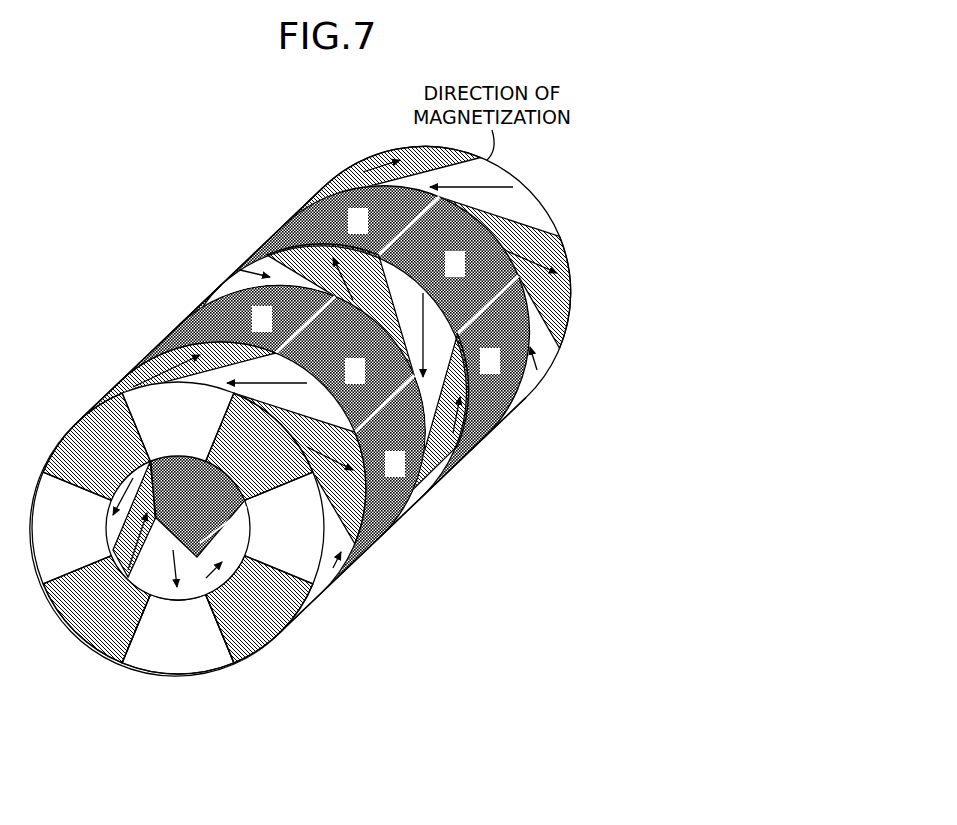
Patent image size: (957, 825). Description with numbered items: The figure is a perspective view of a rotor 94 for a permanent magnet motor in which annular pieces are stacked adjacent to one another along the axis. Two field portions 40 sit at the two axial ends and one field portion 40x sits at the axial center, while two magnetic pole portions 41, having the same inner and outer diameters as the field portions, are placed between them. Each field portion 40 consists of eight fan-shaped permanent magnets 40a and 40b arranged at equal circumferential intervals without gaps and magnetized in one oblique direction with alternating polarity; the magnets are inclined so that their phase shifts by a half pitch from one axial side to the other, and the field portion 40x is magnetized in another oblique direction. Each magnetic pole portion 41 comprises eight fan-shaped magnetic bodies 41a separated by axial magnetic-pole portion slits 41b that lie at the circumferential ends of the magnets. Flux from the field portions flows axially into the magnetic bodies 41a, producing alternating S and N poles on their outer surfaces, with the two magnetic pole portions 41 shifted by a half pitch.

The rotor 94 is at (628, 115).
The field portion 40 is at (280, 222).
The field portion 40x is at (176, 321).
The permanent magnet 40a is at (178, 658).
The permanent magnet 40b is at (258, 630).
The magnetic pole portion 41 is at (305, 414).
The magnetic body 41a is at (480, 430).
The magnetic-pole portion slit 41b is at (387, 527).